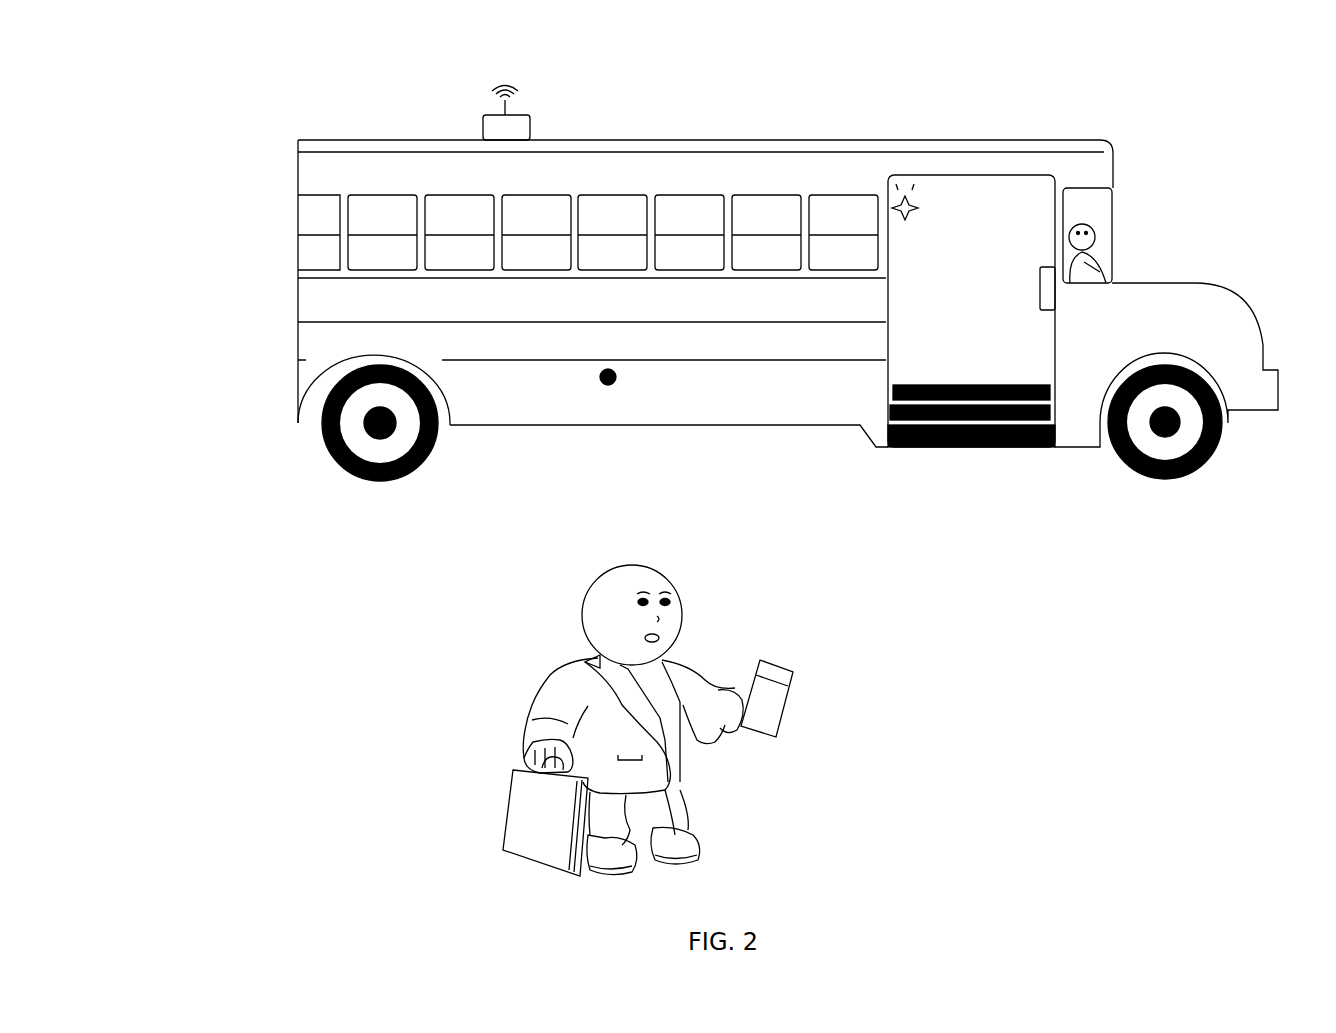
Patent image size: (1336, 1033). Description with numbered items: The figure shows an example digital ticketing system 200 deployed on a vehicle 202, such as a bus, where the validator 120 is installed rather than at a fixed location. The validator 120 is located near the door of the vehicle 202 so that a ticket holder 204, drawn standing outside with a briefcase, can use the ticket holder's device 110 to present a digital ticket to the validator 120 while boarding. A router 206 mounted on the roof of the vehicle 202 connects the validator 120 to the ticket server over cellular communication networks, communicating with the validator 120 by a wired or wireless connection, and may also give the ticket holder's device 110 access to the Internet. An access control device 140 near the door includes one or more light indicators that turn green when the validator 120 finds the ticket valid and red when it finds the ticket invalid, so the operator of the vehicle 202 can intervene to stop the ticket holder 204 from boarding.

The digital ticketing system 200 is at (234, 53).
The vehicle 202 is at (1017, 133).
The router 206 is at (530, 116).
The access control device 140 is at (905, 220).
The validator 120 is at (1040, 290).
The ticket holder 204 is at (527, 643).
The ticket holder's device 110 is at (793, 668).